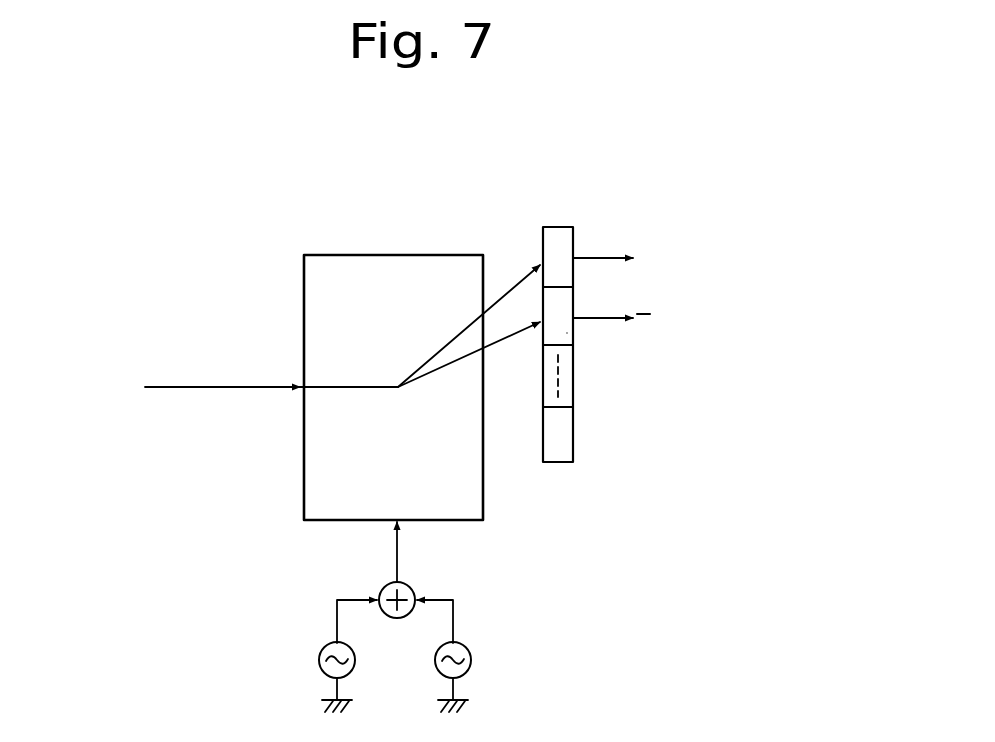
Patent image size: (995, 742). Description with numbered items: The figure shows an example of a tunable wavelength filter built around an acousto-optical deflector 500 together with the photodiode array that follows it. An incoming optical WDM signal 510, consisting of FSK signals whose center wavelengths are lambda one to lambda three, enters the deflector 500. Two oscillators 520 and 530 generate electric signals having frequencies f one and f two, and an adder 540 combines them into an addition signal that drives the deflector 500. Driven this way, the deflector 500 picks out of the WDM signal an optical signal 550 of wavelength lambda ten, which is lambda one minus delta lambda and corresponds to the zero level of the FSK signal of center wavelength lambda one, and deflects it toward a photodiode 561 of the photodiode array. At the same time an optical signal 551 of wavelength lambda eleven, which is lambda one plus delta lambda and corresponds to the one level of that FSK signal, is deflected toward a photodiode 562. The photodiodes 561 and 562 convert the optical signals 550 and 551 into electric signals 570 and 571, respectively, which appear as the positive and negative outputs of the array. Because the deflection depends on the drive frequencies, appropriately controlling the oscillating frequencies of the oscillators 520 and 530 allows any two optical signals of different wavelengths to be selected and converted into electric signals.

The acousto-optical deflector 500 is at (308, 254).
The incident light beam 510 is at (172, 390).
The oscillator 520 is at (322, 646).
The oscillator 530 is at (470, 650).
The adder 540 is at (413, 586).
The optical signal 550 is at (415, 372).
The optical signal 551 is at (447, 367).
The photodiode 561 is at (534, 230).
The photodiode 562 is at (567, 333).
The electric signal 570 is at (605, 259).
The electric signal 571 is at (605, 319).